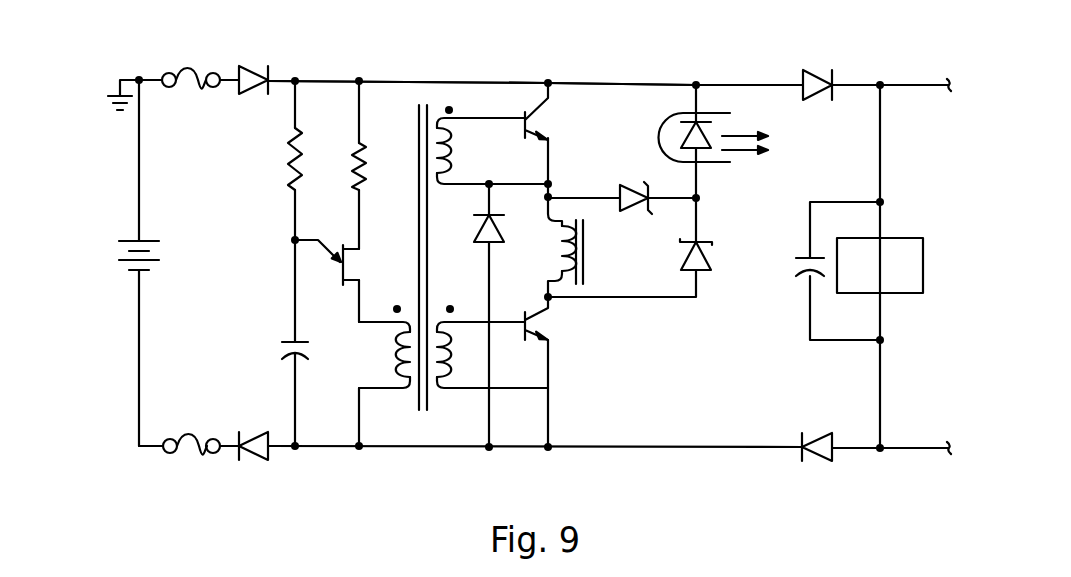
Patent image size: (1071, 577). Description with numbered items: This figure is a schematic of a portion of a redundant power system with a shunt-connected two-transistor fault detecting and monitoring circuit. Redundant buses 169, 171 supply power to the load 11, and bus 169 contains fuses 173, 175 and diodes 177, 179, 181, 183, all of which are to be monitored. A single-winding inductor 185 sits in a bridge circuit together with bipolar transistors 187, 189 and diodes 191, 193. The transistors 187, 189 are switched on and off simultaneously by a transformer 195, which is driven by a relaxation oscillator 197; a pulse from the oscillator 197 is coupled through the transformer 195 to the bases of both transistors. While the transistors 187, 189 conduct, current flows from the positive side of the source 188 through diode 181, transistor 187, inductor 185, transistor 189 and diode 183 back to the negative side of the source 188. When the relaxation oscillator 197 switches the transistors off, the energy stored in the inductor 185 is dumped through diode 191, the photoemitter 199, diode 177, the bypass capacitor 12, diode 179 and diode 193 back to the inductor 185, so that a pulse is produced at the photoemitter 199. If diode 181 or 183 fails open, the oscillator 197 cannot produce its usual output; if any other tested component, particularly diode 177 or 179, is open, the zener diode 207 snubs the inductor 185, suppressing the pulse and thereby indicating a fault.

The load 11 is at (906, 238).
The bypass capacitor 12 is at (806, 278).
The bus 169 is at (393, 81).
The bus 171 is at (906, 84).
The fuse 173 is at (190, 72).
The fuse 175 is at (186, 438).
The diode 177 is at (812, 72).
The diode 179 is at (816, 440).
The diode 181 is at (251, 66).
The diode 183 is at (256, 432).
The single-winding inductor 185 is at (588, 282).
The bipolar transistor 187 is at (530, 118).
The source 188 is at (145, 240).
The bipolar transistor 189 is at (550, 322).
The diode 191 is at (712, 246).
The diode 193 is at (480, 232).
The transformer 195 is at (432, 308).
The relaxation oscillator 197 is at (324, 243).
The photoemitter 199 is at (667, 128).
The zener diode 207 is at (636, 210).